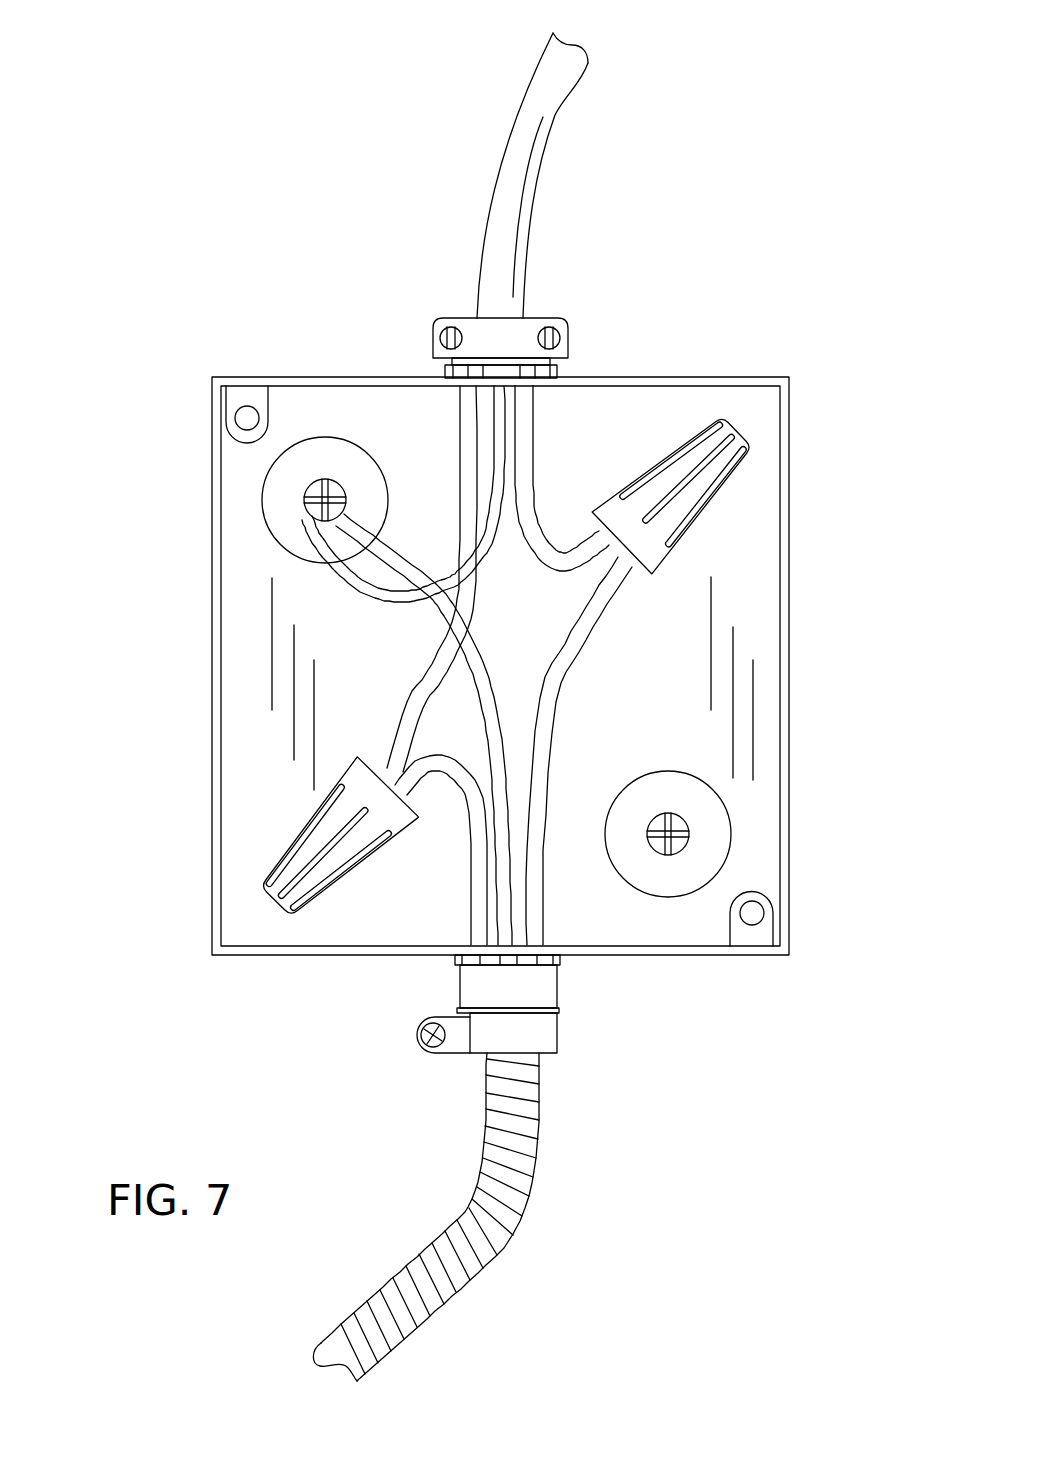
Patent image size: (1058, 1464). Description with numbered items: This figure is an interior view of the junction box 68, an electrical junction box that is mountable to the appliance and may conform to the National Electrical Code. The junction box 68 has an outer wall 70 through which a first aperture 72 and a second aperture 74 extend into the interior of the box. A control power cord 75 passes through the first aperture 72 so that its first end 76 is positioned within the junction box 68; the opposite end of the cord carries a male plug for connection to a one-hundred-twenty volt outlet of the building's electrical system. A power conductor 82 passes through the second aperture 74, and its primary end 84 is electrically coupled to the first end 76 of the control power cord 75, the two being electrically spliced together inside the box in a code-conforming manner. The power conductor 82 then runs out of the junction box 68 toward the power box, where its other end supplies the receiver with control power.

The junction box 68 is at (753, 377).
The outer wall 70 is at (327, 377).
The first aperture 72 is at (498, 358).
The second aperture 74 is at (510, 990).
The control power cord 75 is at (508, 135).
The first end 76 is at (630, 563).
The power conductor 82 is at (497, 1250).
The primary end 84 is at (578, 600).